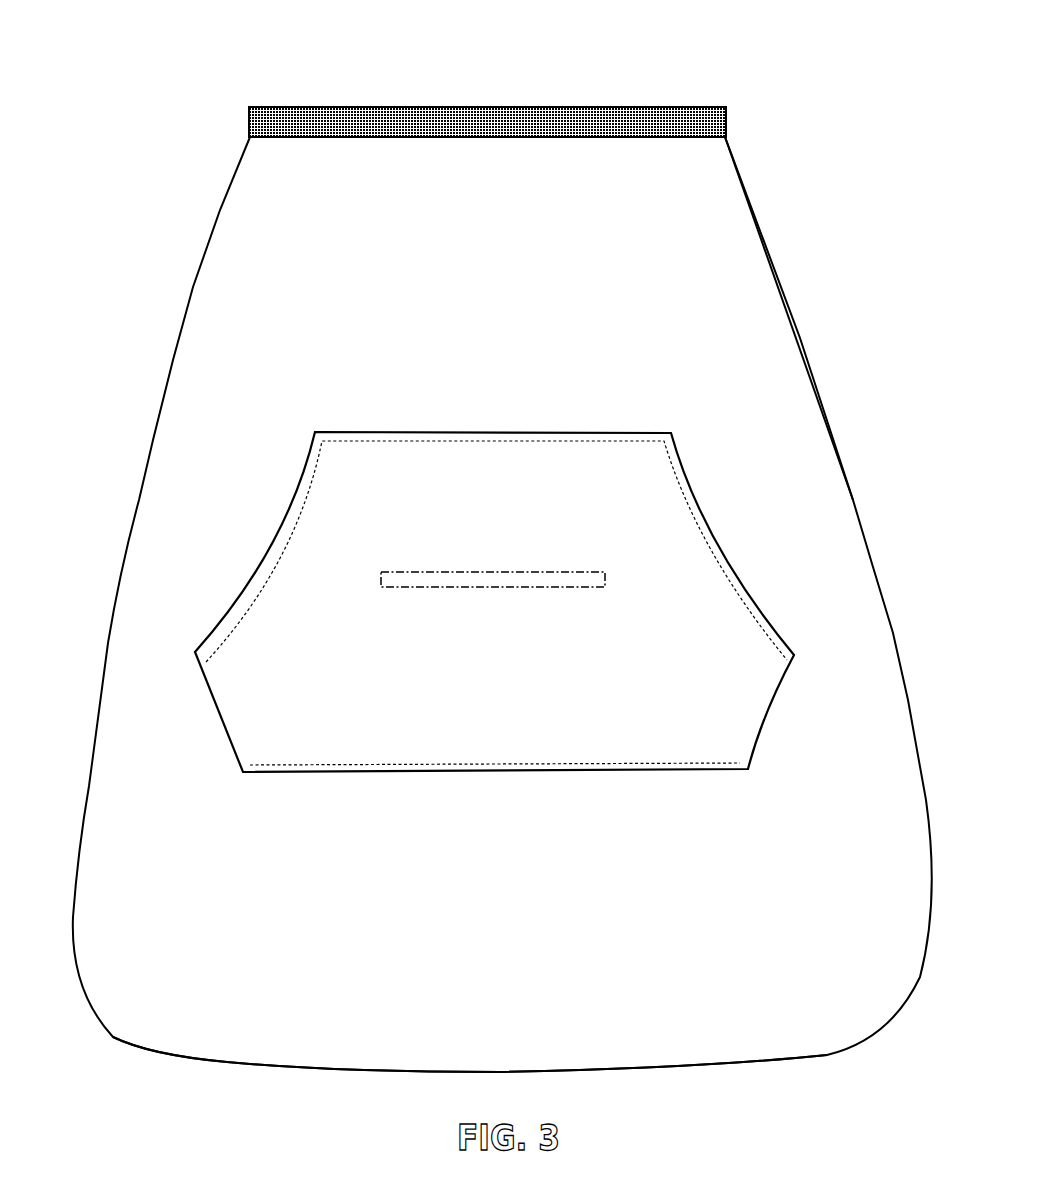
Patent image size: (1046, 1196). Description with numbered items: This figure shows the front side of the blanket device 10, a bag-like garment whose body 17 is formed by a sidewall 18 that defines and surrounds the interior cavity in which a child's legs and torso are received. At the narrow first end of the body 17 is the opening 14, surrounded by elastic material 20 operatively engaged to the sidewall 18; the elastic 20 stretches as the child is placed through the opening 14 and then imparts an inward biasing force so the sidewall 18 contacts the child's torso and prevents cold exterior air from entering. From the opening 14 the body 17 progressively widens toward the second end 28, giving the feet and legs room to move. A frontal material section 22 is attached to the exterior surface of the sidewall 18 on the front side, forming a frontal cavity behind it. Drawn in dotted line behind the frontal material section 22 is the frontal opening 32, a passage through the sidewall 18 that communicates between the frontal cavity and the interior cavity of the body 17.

The blanket device 10 is at (115, 290).
The opening 14 is at (575, 107).
The body 17 is at (800, 340).
The sidewall 18 is at (793, 470).
The elastic material 20 is at (390, 120).
The frontal material section 22 is at (250, 618).
The second end 28 is at (397, 1072).
The frontal opening 32 is at (538, 572).